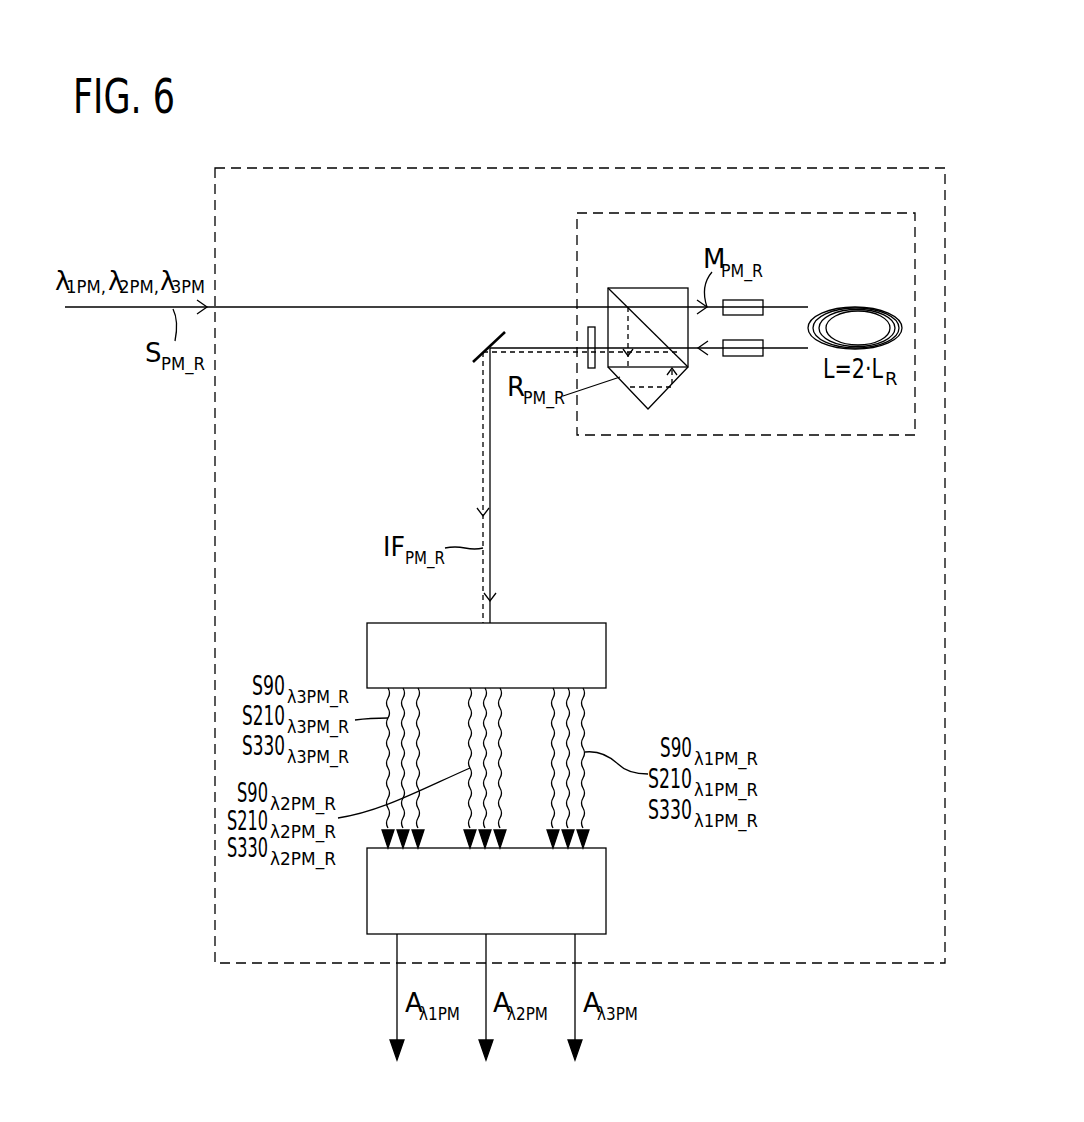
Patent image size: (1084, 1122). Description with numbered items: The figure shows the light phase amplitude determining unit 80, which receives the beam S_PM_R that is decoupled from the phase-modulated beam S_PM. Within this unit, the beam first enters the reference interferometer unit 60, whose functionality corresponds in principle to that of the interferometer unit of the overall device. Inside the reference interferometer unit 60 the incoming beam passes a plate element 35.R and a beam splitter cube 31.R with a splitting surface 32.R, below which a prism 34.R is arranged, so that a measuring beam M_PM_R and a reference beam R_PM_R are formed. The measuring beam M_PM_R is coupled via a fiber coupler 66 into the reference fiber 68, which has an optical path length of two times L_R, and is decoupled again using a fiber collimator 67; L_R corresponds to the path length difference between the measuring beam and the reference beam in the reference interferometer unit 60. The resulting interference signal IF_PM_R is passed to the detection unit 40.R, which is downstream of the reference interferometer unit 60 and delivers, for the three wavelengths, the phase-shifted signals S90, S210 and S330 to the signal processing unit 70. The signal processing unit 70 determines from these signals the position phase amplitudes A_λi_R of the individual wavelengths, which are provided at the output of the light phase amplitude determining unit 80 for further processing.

The beam splitter cube 31.R is at (670, 300).
The beam splitting surface 32.R is at (627, 300).
The prism retroreflector 34.R is at (665, 393).
The polarizer plate 35.R is at (587, 333).
The detection unit 40.R is at (597, 652).
The reference interferometer unit 60 is at (775, 418).
The fiber coupler 66 is at (761, 303).
The fiber collimator 67 is at (747, 356).
The reference fiber 68 is at (857, 307).
The signal processing unit 70 is at (593, 897).
The light phase amplitude determining unit 80 is at (838, 950).